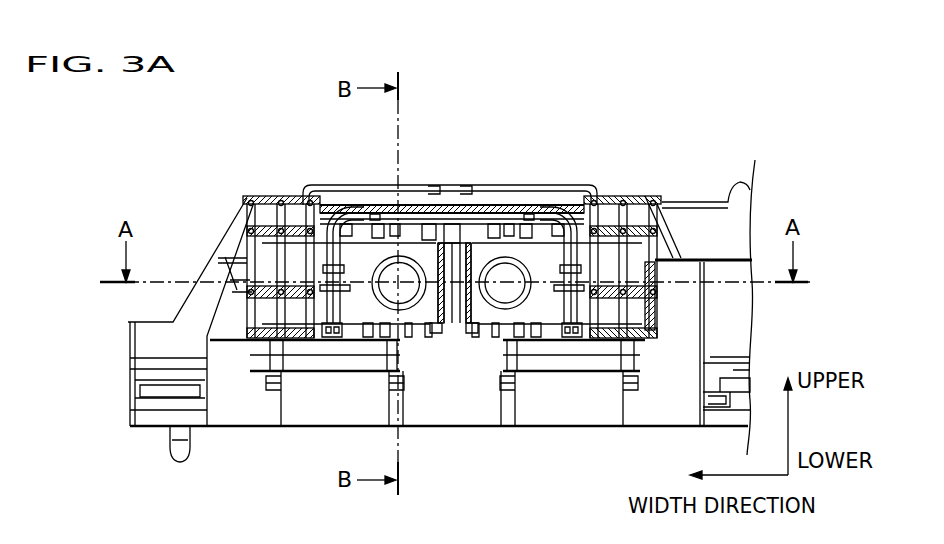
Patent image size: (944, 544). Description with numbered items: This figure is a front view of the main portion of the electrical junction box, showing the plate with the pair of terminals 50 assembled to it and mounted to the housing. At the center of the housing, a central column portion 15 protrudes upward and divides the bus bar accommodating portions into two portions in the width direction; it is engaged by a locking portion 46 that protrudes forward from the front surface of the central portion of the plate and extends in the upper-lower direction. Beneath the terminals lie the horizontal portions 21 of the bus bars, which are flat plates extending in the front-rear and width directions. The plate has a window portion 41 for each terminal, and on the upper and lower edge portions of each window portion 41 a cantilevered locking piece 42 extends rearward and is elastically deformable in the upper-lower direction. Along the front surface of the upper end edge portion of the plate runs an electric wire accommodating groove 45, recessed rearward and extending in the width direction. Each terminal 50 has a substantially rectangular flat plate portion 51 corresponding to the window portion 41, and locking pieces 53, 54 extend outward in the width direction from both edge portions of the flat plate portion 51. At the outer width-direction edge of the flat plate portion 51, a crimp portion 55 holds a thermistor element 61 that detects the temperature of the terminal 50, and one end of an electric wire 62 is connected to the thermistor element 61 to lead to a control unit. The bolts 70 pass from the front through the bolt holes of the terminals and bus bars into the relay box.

The central column portion 15 is at (451, 222).
The horizontal portion 21 is at (337, 350).
The window portion 41 is at (378, 229).
The locking piece 42 is at (396, 228).
The electric wire accommodating groove 45 is at (494, 228).
The locking portion 46 is at (430, 238).
The terminal 50 is at (347, 230).
The flat plate portion 51 is at (452, 173).
The locking piece 53 is at (300, 262).
The locking piece 54 is at (461, 326).
The crimp portion 55 is at (330, 304).
The thermistor element 61 is at (330, 281).
The electric wire 62 is at (328, 224).
The bolt 70 is at (408, 306).